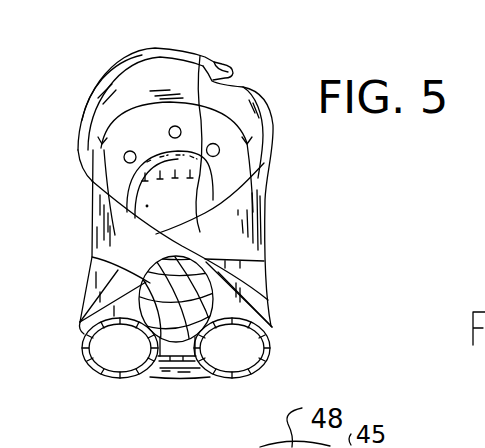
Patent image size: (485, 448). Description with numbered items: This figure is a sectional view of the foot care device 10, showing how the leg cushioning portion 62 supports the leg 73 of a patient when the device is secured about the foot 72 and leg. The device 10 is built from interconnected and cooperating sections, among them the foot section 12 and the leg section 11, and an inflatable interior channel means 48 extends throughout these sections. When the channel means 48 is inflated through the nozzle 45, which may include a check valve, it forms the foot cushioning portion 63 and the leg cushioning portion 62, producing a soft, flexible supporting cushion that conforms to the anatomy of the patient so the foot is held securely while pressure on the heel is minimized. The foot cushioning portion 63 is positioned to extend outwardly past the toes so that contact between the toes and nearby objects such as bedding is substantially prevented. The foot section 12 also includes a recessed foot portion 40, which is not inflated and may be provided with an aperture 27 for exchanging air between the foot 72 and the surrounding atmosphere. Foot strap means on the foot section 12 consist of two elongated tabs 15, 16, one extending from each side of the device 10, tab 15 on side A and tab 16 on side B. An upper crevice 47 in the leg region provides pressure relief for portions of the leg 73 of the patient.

The foot care device 10 is at (317, 66).
The leg section 11 is at (108, 382).
The foot section 12 is at (87, 194).
The elongated tab 15 is at (114, 238).
The elongated tab 16 is at (242, 239).
The aperture 27 is at (175, 125).
The recessed foot portion 40 is at (262, 163).
The nozzle 45 is at (234, 72).
The upper crevice 47 is at (175, 362).
The inflatable interior channel means 48 is at (106, 102).
The leg cushioning portion 62 is at (275, 357).
The foot cushioning portion 63 is at (135, 80).
The foot 72 is at (200, 55).
The leg 73 is at (252, 282).